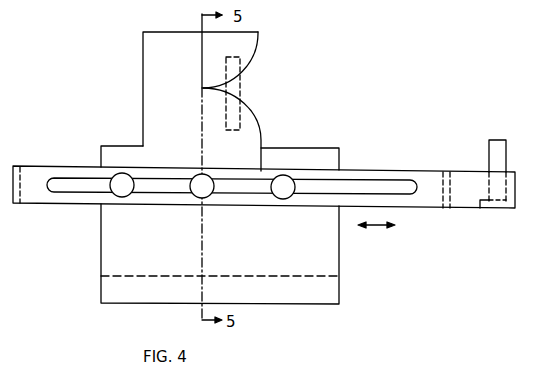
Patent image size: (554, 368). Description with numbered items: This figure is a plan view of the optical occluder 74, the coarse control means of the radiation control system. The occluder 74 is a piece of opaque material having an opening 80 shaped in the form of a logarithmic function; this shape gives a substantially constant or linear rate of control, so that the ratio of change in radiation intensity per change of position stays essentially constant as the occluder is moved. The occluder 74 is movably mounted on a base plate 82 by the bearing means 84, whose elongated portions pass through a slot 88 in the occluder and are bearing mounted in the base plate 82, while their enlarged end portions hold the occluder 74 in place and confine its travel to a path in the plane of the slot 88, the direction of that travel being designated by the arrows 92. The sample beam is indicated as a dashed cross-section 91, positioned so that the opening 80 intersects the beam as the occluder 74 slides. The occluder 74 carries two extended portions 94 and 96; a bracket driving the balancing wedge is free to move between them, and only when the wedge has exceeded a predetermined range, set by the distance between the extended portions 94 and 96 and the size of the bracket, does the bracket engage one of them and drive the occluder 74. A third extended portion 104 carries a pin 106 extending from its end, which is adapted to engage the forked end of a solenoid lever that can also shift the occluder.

The optical occluder 74 is at (192, 31).
The opening 80 is at (262, 119).
The base plate 82 is at (323, 265).
The bearing means 84 is at (271, 178).
The slot 88 is at (318, 190).
The dashed cross-section of the sample beam 91 is at (233, 88).
The arrows 92 is at (376, 225).
The extended portion 94 is at (443, 170).
The extended portion 96 is at (20, 190).
The third extended portion 104 is at (497, 208).
The pin 106 is at (497, 138).